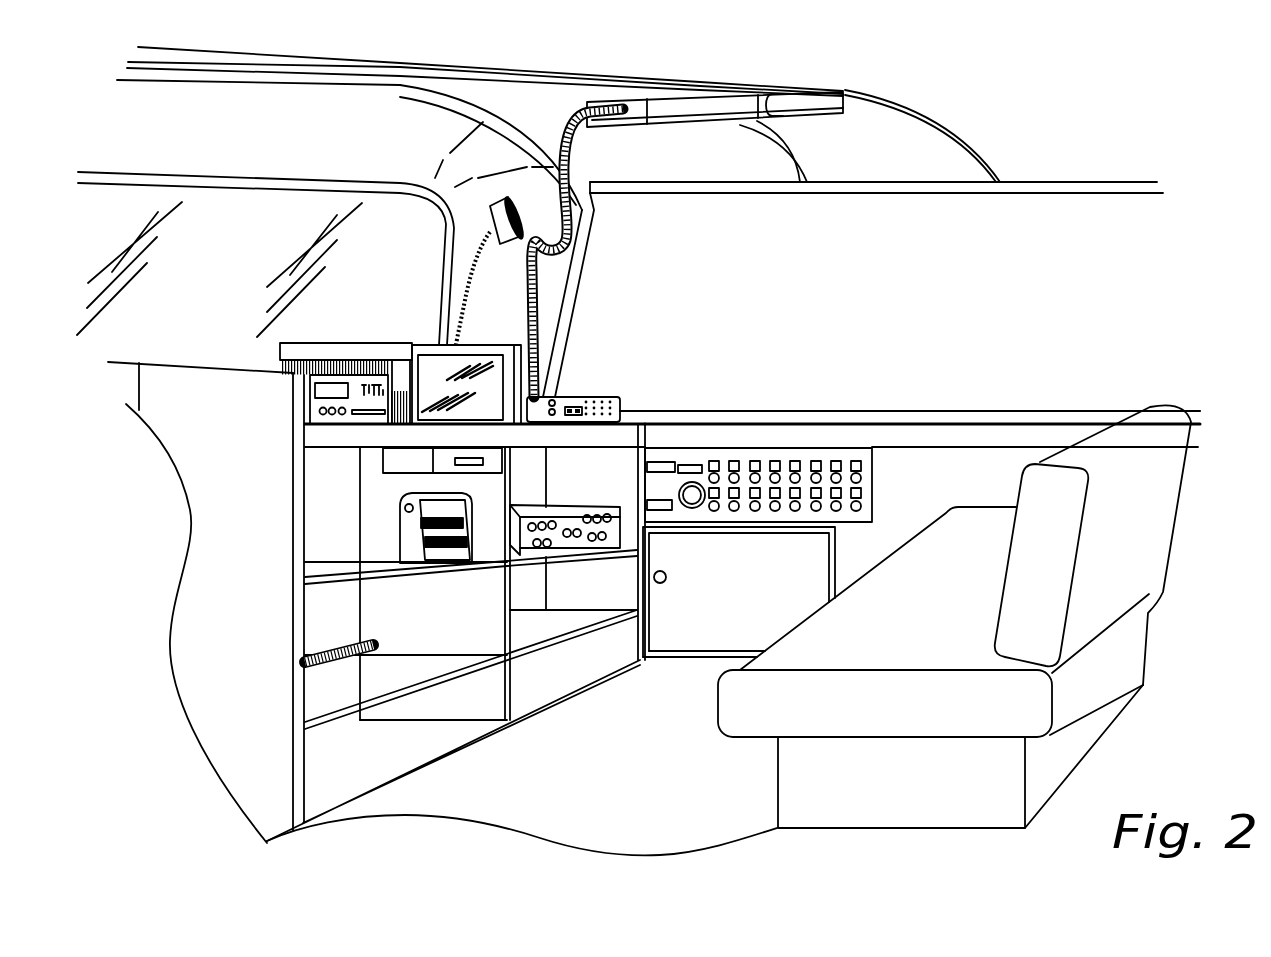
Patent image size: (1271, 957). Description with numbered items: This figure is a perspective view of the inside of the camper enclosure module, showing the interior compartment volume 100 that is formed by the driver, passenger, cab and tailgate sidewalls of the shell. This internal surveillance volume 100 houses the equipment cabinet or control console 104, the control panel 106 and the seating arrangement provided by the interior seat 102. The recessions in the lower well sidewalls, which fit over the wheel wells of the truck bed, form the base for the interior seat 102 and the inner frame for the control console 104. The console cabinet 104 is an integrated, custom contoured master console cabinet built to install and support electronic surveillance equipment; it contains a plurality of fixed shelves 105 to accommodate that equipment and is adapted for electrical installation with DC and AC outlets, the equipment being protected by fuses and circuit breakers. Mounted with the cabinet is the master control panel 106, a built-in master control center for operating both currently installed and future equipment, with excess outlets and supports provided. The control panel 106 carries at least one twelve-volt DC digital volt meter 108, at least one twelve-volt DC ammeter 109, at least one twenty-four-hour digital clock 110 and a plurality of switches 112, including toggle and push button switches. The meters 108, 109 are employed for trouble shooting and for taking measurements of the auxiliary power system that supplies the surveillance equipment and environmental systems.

The compartment volume 100 is at (608, 757).
The interior seat 102 is at (896, 721).
The control console 104 is at (267, 607).
The fixed shelves 105 is at (570, 560).
The control panel 106 is at (819, 465).
The digital volt meter 108 is at (658, 510).
The ammeter 109 is at (692, 467).
The digital clock 110 is at (660, 467).
The switches 112 is at (705, 456).